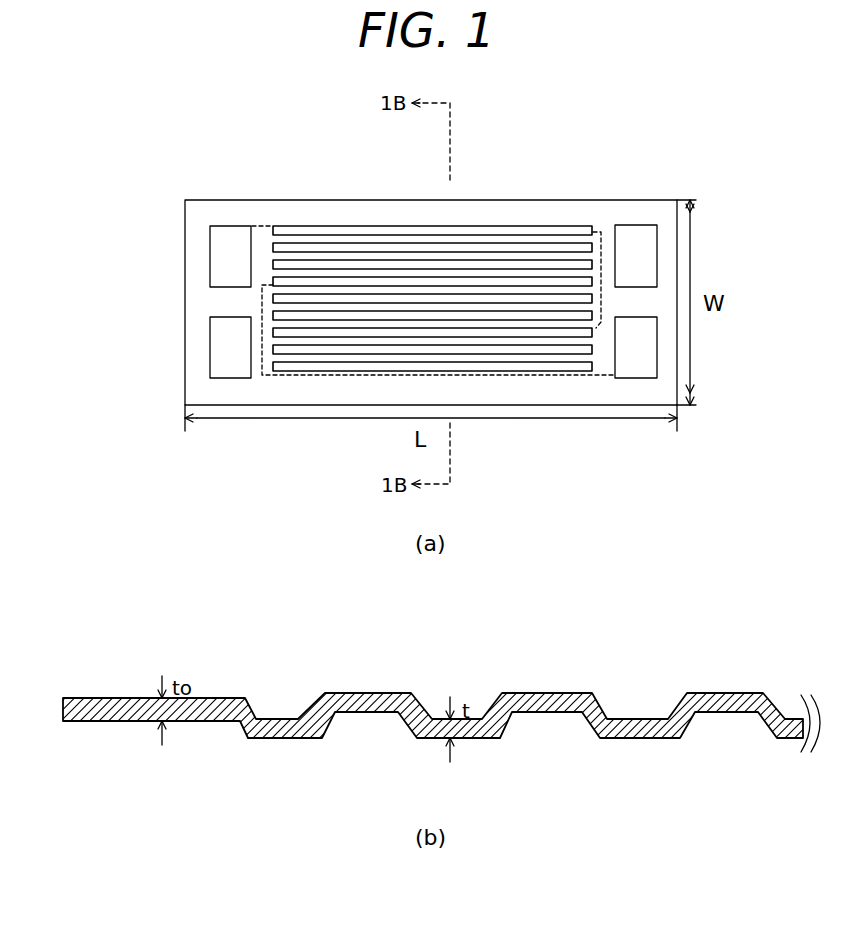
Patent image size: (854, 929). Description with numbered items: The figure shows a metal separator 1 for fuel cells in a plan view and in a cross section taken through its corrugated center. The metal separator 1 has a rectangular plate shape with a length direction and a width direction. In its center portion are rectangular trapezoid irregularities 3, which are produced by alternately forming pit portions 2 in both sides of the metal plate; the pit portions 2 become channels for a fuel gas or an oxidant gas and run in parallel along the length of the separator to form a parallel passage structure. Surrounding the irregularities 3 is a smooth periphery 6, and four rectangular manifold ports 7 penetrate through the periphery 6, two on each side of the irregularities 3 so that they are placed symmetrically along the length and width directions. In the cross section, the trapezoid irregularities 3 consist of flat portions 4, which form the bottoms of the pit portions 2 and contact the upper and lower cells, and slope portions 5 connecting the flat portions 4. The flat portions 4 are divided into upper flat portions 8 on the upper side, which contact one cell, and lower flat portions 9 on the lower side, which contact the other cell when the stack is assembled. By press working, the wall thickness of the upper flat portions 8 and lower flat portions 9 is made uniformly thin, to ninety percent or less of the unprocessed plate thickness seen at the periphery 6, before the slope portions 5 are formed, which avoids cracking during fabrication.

The metal separator for fuel cells 1 is at (669, 139).
The pit portion 2 is at (347, 231).
The trapezoid irregularities 3 is at (524, 201).
The flat portion 4 is at (374, 693).
The slope portion 5 is at (314, 702).
The periphery 6 is at (283, 212).
The manifold port 7 is at (222, 226).
The upper flat portion 8 is at (718, 693).
The lower flat portion 9 is at (635, 738).